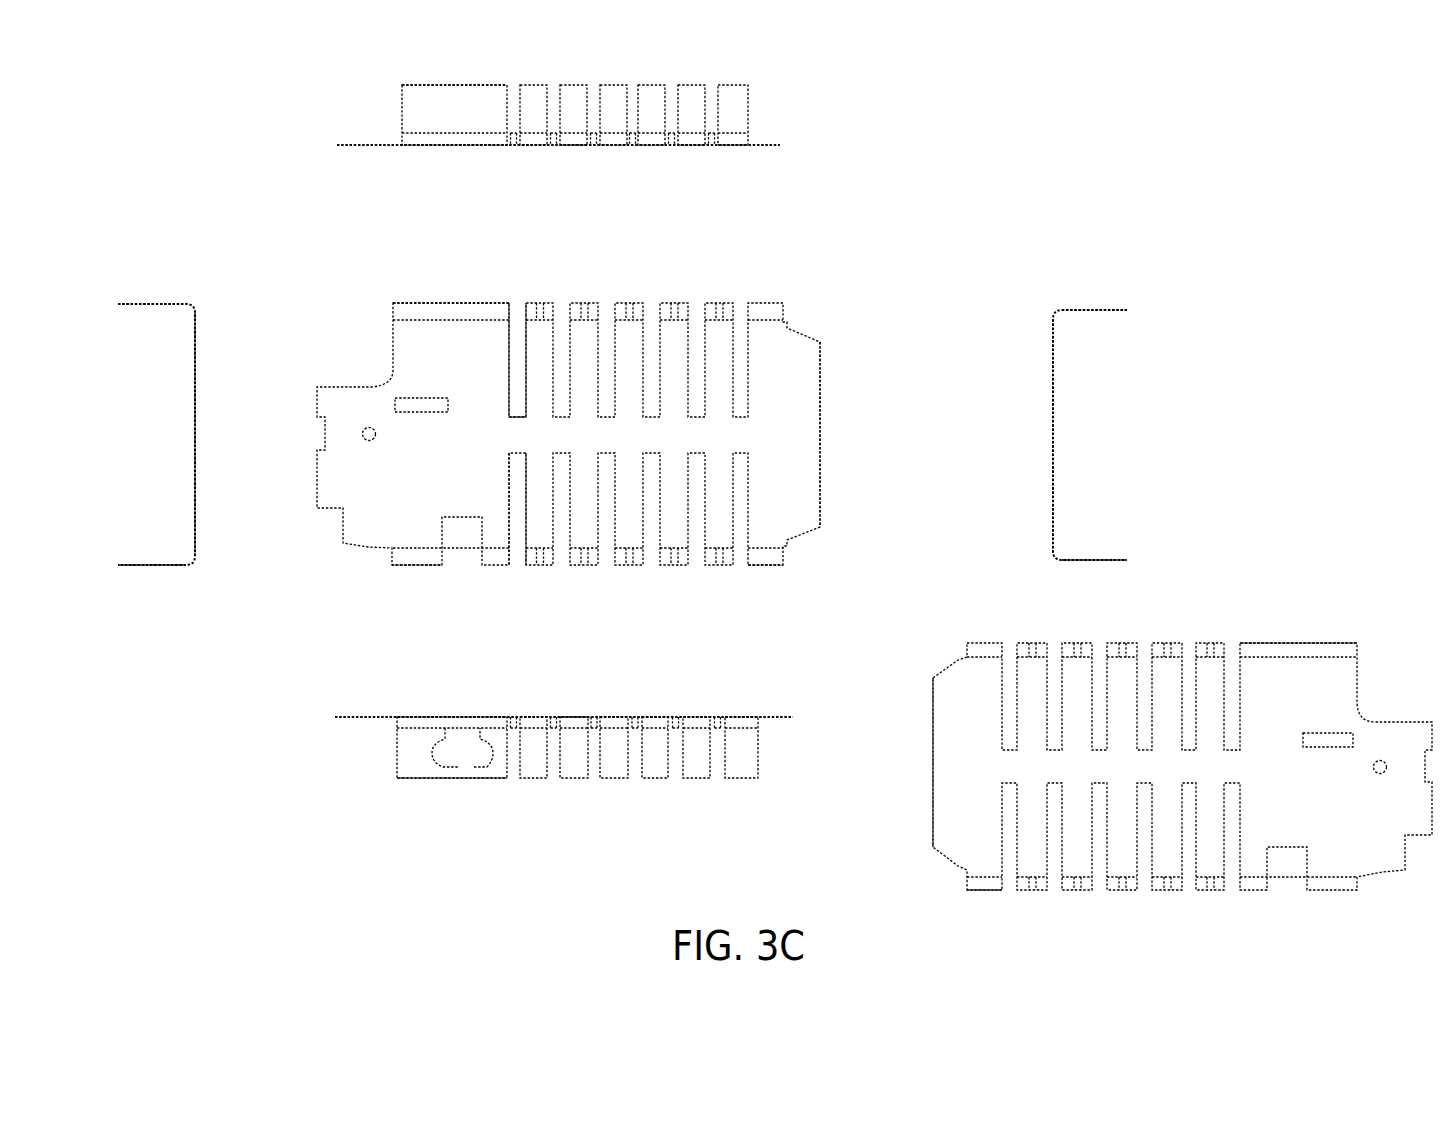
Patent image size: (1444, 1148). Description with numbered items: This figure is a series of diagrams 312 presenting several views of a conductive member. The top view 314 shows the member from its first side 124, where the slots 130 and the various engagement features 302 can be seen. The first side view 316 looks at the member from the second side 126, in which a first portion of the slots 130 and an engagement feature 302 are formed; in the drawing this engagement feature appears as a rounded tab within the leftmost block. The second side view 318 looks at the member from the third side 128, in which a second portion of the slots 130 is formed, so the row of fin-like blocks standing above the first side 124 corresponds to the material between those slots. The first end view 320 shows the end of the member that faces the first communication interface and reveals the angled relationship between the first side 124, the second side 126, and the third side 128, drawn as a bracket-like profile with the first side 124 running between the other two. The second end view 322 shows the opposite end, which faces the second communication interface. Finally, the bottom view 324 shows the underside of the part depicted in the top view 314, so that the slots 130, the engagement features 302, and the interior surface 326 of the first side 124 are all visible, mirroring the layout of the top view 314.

The series of diagrams 312 is at (1322, 93).
The third side 128 is at (432, 118).
The first side 124 is at (768, 143).
The second side 126 is at (147, 567).
The second side view 318 is at (558, 138).
The first end view 320 is at (156, 466).
The top view 314 is at (568, 460).
The slots 130 is at (516, 562).
The first side view 316 is at (564, 776).
The engagement features 302 is at (465, 760).
The second end view 322 is at (1095, 457).
The interior surface 326 is at (967, 815).
The bottom view 324 is at (1182, 798).